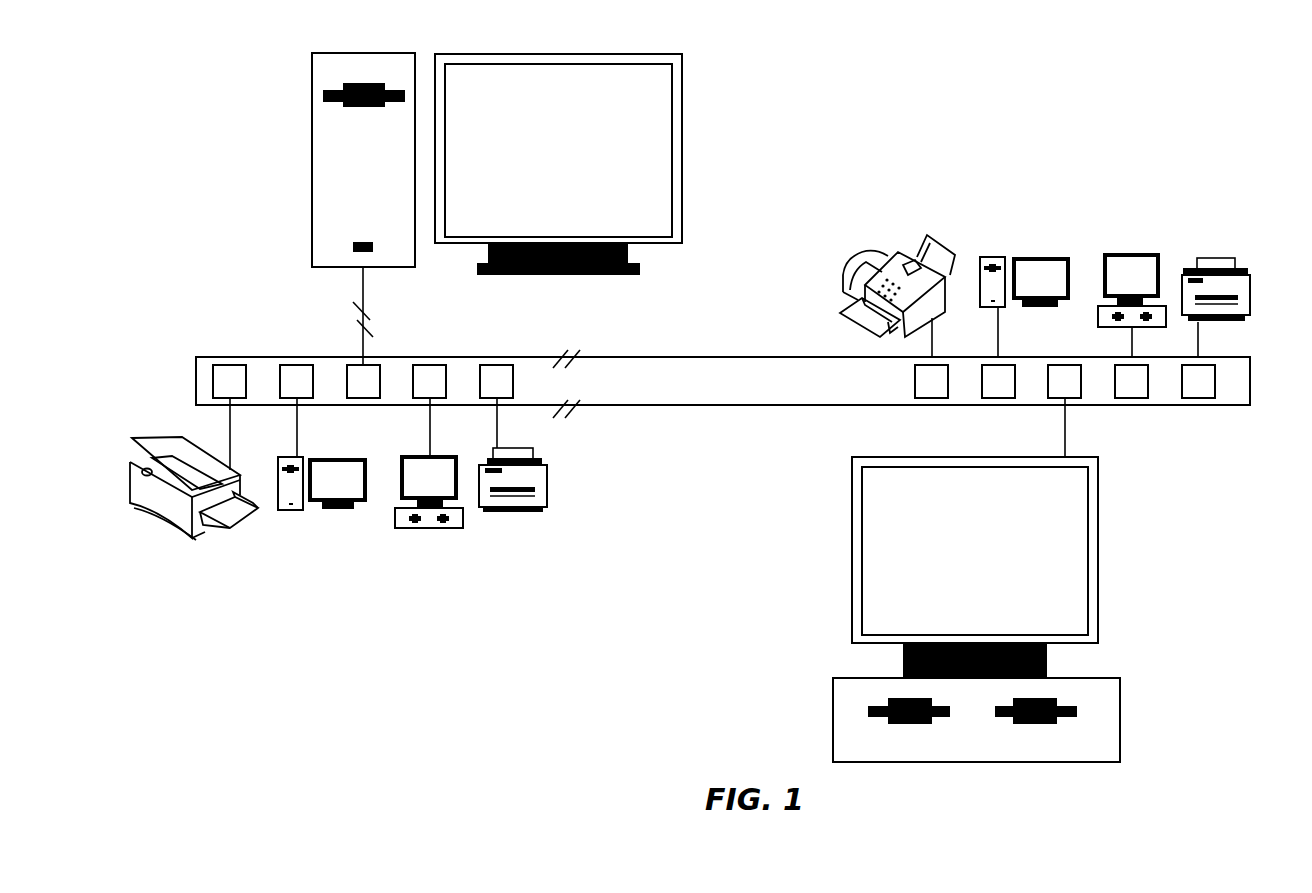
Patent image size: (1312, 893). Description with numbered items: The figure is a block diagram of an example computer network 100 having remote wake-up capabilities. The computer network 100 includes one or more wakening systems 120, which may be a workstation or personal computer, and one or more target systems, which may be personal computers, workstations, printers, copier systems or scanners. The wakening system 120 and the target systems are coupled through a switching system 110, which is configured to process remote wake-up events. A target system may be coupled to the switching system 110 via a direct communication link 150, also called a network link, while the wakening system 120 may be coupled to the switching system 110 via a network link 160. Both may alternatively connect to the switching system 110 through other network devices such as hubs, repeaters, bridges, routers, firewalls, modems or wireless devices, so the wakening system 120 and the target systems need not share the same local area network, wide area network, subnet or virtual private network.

The computer network 100 is at (937, 108).
The switching system 110 is at (1252, 383).
The wakening system 120 is at (563, 53).
The direct communication link 150 is at (1068, 442).
The network link 160 is at (363, 342).